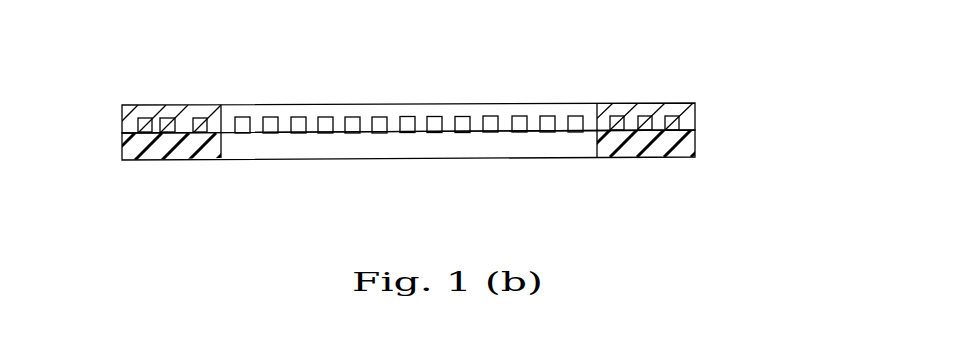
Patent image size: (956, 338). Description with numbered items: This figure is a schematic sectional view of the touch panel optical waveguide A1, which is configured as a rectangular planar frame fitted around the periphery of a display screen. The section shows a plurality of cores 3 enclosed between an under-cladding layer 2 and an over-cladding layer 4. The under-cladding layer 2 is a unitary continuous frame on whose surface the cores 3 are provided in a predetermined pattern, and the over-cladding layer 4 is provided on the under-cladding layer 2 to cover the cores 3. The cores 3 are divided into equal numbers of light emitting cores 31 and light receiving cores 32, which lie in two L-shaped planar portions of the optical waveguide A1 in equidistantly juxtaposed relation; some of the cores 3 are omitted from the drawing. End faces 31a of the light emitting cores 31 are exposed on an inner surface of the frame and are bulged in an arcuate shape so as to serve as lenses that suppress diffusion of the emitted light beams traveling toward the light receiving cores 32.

The under-cladding layer 2 is at (697, 142).
The over-cladding layer 4 is at (697, 105).
The touch panel optical waveguide A1 is at (162, 100).
The cores 3 is at (415, 85).
The light receiving cores 32 is at (176, 118).
The light emitting cores 31 is at (650, 116).
The end faces of the light emitting cores 31a is at (436, 117).